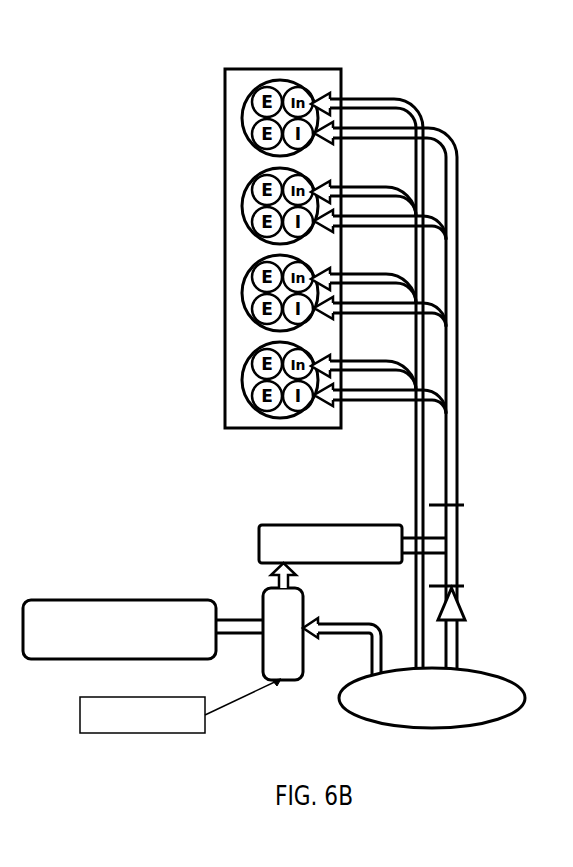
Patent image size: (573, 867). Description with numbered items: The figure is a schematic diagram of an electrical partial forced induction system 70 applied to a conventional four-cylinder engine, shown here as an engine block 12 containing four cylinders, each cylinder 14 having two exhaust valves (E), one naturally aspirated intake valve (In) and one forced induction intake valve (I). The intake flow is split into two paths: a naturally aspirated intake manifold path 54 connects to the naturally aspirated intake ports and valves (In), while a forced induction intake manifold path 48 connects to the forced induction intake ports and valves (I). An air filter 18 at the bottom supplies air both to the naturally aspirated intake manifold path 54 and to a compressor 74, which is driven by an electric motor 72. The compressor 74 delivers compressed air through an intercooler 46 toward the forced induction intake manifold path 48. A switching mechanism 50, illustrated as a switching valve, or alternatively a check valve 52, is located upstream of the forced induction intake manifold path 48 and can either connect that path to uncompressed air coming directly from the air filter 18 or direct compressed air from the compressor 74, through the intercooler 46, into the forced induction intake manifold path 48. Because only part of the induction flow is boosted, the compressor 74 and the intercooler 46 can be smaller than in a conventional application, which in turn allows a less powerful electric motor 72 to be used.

The engine 12 is at (244, 230).
The cylinder 14 is at (282, 80).
The air filter 18 is at (497, 672).
The intercooler 46 is at (350, 525).
The forced induction intake manifold path 48 is at (458, 290).
The switching mechanism 50 is at (455, 542).
The check valve 52 is at (460, 603).
The naturally aspirated intake manifold path 54 is at (400, 107).
The electrical partial forced induction system 70 is at (535, 58).
The electric motor 72 is at (118, 600).
The compressor 74 is at (267, 585).